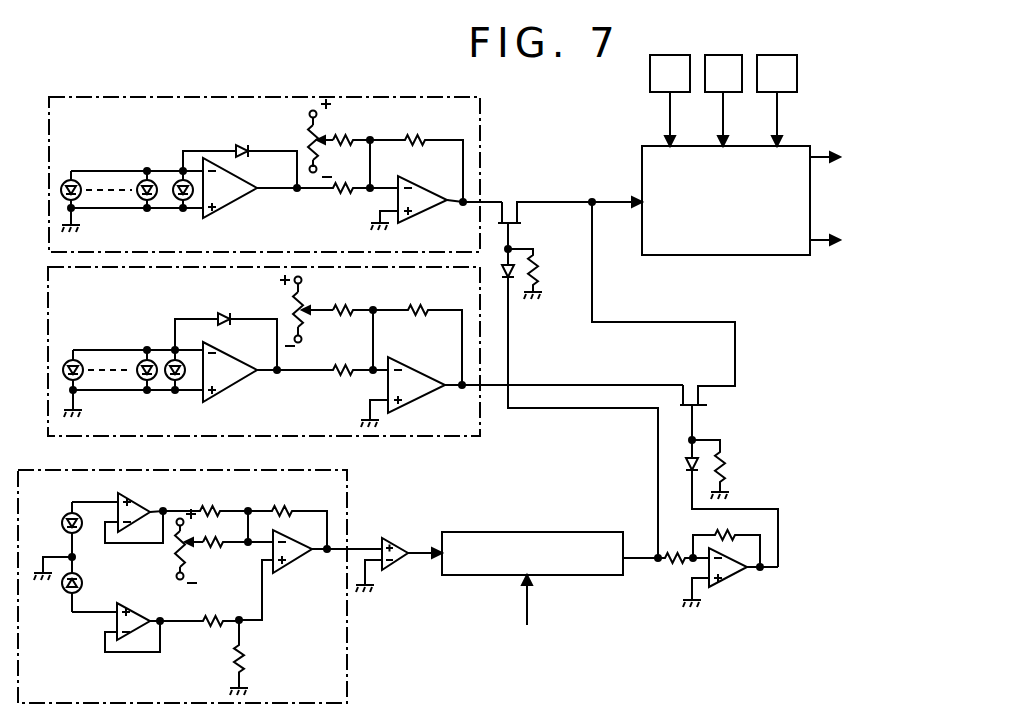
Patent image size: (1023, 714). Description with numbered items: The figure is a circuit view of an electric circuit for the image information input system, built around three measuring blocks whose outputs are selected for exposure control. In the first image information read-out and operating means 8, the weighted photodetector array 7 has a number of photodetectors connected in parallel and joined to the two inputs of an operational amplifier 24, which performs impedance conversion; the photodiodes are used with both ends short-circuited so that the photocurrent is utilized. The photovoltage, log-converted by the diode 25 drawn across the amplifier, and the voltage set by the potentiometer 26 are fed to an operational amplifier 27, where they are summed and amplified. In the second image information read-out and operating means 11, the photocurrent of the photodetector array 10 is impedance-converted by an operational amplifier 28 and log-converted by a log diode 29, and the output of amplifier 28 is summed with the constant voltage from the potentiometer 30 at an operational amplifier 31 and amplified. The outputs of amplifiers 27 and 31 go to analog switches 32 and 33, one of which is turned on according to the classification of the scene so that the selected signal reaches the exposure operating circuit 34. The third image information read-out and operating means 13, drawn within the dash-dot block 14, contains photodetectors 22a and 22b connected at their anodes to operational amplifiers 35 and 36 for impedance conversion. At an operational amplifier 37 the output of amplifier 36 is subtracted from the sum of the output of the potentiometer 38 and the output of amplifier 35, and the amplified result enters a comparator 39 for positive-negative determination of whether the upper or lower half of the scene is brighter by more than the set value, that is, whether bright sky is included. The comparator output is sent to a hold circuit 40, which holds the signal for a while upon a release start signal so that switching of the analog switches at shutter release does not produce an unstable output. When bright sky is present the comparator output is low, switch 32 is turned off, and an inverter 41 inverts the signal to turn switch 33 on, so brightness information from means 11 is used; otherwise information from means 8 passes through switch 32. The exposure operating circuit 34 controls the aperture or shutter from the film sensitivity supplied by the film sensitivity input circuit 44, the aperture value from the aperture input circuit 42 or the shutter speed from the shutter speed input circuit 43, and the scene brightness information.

The photodetector array 7 is at (144, 212).
The first image information read-out and operating means 8 is at (396, 98).
The photodetector array 10 is at (126, 345).
The second image information read-out and operating means 11 is at (423, 441).
The third image information read-out and operating means 13 is at (62, 546).
The third light measuring circuit 14 is at (351, 513).
The photodetector 22a is at (84, 526).
The photodetector 22b is at (66, 595).
The operational amplifier 24 is at (240, 203).
The logarithmic compression diode 25 is at (243, 144).
The potentiometer 26 is at (312, 135).
The operational amplifier 27 is at (428, 207).
The operational amplifier 28 is at (237, 398).
The log diode 29 is at (224, 314).
The potentiometer 30 is at (307, 301).
The operational amplifier 31 is at (418, 399).
The analog switch 32 is at (521, 222).
The analog switch 33 is at (701, 396).
The exposure operating circuit 34 is at (766, 256).
The operational amplifier 35 is at (142, 506).
The operational amplifier 36 is at (140, 616).
The operational amplifier 37 is at (296, 563).
The potentiometer 38 is at (189, 545).
The comparator 39 is at (399, 571).
The hold circuit 40 is at (597, 532).
The inverter 41 is at (727, 580).
The aperture input circuit 42 is at (667, 55).
The shutter speed input circuit 43 is at (722, 55).
The film sensitivity input circuit 44 is at (786, 55).